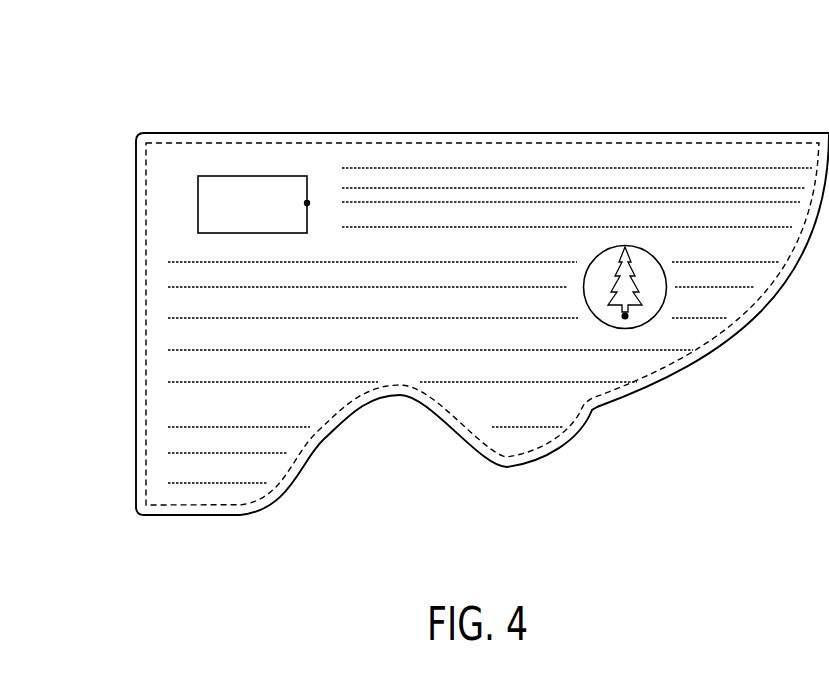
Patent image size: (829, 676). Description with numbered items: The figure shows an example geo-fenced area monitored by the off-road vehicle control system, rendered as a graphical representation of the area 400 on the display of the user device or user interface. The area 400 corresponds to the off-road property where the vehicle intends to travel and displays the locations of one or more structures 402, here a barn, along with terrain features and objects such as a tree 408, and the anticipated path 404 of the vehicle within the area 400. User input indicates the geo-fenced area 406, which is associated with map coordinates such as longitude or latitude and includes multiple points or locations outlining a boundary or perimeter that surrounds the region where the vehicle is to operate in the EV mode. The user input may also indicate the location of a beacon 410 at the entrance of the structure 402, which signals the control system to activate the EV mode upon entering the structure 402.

The graphical representation of the area 400 is at (88, 97).
The structure 402 is at (257, 176).
The anticipated path 404 is at (437, 164).
The geo-fenced area 406 is at (559, 141).
The tree 408 is at (652, 318).
The beacon 410 is at (309, 201).